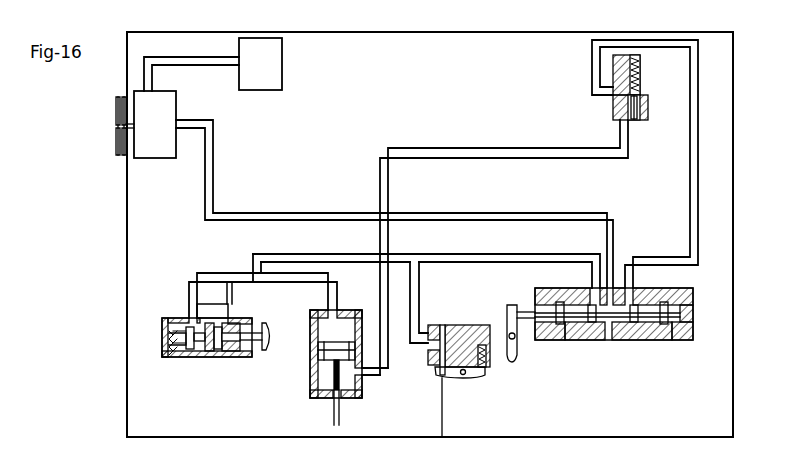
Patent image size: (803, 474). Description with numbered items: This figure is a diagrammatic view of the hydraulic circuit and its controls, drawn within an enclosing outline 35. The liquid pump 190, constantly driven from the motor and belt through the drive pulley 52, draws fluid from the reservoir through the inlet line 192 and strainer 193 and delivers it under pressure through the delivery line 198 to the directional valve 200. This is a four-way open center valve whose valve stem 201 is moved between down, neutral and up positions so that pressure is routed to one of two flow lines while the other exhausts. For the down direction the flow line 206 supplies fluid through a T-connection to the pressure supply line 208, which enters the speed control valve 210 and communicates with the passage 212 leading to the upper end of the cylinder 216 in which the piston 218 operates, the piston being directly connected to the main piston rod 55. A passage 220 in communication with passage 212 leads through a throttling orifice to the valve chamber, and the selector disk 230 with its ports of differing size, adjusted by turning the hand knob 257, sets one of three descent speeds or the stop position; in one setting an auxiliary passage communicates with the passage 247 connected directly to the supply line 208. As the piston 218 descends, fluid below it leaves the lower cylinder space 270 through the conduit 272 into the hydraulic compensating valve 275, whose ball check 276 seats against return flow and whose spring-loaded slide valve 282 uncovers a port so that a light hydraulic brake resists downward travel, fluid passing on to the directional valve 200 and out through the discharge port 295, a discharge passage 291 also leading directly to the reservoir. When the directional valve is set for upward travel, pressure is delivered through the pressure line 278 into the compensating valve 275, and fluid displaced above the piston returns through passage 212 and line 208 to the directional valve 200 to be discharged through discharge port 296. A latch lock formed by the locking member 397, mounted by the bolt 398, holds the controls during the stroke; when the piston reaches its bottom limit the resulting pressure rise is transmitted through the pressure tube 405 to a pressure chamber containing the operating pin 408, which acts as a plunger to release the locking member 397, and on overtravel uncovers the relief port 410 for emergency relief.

The housing / control unit enclosure 35 is at (126, 256).
The drive pulley 52 is at (114, 127).
The main piston rod 55 is at (341, 413).
The liquid pump 190 is at (163, 158).
The inlet line 192 is at (206, 65).
The strainer 193 is at (282, 67).
The delivery line 198 is at (213, 154).
The directional valve 200 is at (613, 341).
The valve stem 201 is at (514, 305).
The flow line 206 is at (528, 254).
The pressure supply line 208 is at (305, 254).
The speed control valve 210 is at (162, 341).
The passage 212 is at (212, 273).
The cylinder 216 is at (345, 320).
The piston 218 is at (320, 352).
The passage 220 is at (188, 310).
The selector disk 230 is at (230, 358).
The passage 247 is at (232, 305).
The hand knob 257 is at (268, 352).
The lower cylinder space 270 is at (365, 378).
The conduit 272 is at (388, 186).
The hydraulic compensating valve 275 is at (613, 73).
The ball check 276 is at (614, 106).
The pressure line 278 is at (690, 186).
The slide valve 282 is at (642, 98).
The discharge passage 291 is at (640, 91).
The discharge port 295 is at (672, 341).
The discharge port 296 is at (566, 341).
The locking member 397 is at (465, 380).
The bolt 398 is at (487, 370).
The pressure tube 405 is at (419, 285).
The operating pin 408 is at (442, 437).
The relief port 410 is at (427, 355).